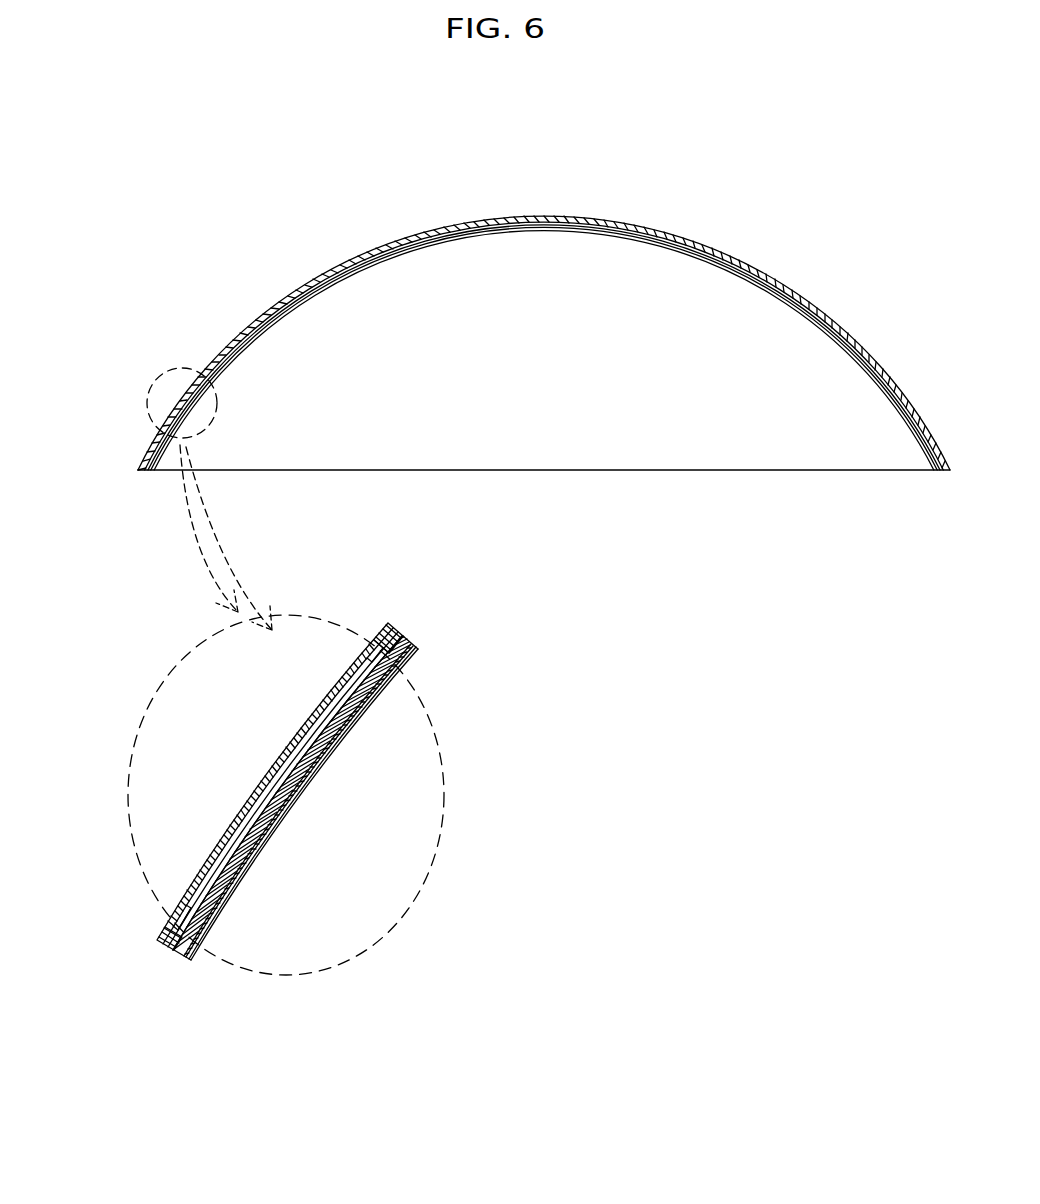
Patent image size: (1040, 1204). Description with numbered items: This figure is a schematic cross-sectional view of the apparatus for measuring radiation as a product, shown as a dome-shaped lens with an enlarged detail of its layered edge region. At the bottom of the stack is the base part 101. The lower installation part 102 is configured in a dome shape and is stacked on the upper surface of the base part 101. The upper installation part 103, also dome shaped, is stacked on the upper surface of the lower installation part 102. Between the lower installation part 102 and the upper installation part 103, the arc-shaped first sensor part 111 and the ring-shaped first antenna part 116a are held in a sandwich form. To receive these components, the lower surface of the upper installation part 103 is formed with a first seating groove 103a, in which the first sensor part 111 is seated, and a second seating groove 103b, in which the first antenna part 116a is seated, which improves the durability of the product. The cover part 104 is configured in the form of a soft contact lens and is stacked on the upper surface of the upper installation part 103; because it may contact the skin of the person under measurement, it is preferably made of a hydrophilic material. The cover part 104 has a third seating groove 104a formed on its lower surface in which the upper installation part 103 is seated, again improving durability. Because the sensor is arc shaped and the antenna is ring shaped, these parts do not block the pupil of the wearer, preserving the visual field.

The base part 101 is at (510, 217).
The lower installation part 102 is at (212, 906).
The upper installation part 103 is at (197, 923).
The first seating groove 103a is at (292, 742).
The second seating groove 103b is at (218, 878).
The cover part 104 is at (418, 232).
The third seating groove 104a is at (363, 680).
The first sensor part 111 is at (247, 797).
The first antenna part 116a is at (196, 887).